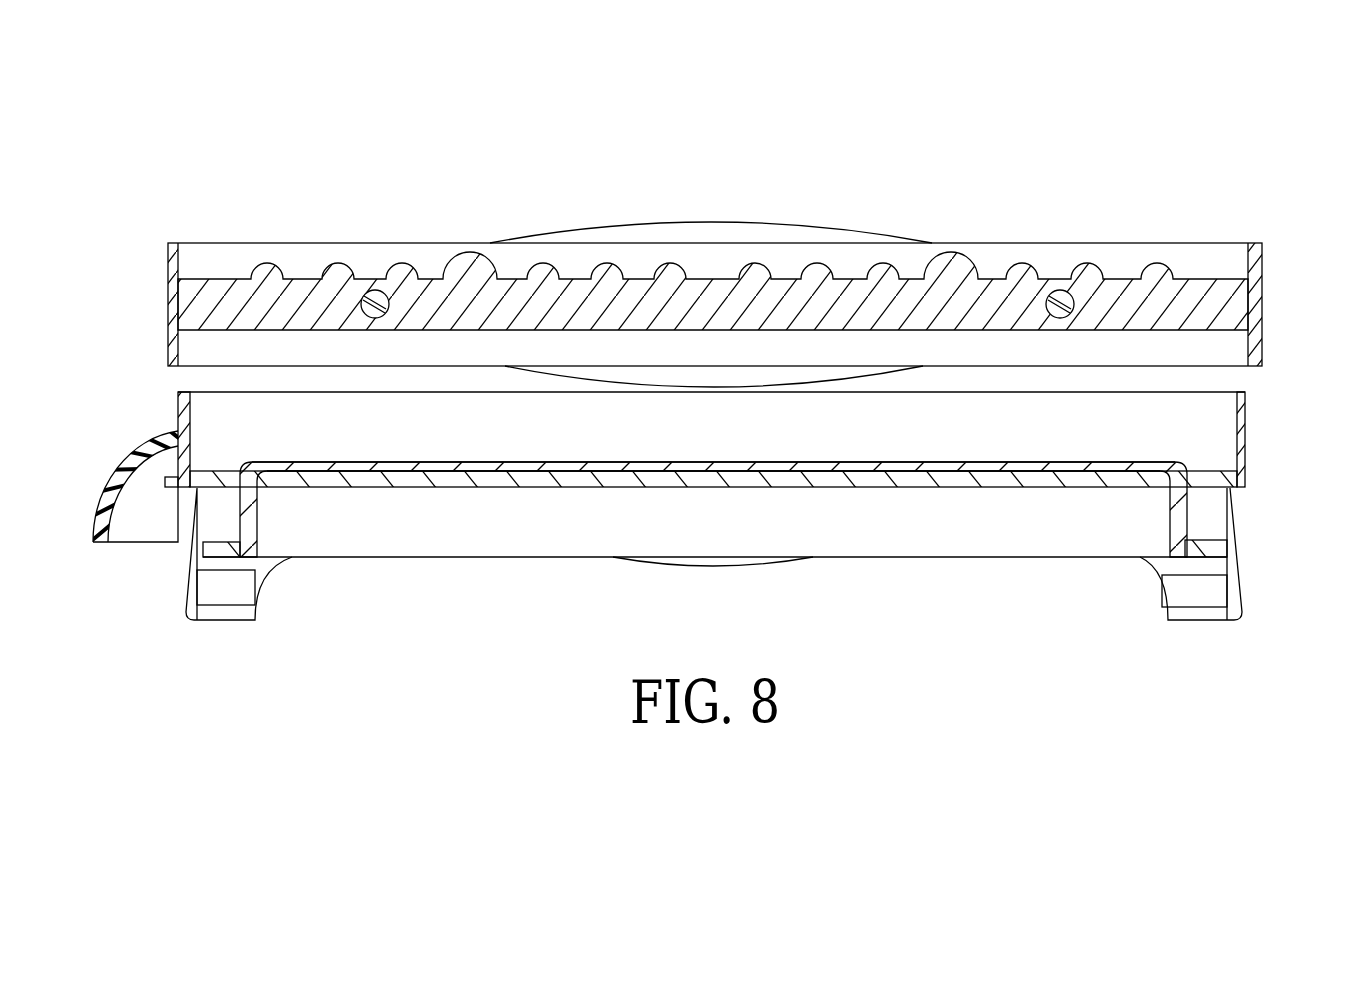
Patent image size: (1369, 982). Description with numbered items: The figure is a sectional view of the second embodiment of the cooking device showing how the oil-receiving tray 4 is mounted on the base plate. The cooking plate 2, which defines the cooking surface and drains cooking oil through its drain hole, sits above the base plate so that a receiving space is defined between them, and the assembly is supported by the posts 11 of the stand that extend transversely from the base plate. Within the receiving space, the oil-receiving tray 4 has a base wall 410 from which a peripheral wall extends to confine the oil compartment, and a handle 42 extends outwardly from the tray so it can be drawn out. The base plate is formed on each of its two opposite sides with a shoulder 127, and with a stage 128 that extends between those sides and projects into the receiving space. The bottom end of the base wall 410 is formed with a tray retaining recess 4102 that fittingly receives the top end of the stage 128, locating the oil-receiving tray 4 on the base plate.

The cooking plate 2 is at (1111, 210).
The oil-receiving tray 4 is at (140, 406).
The handle 42 is at (132, 500).
The base wall 410 is at (1052, 462).
The tray retaining recess 4102 is at (1103, 462).
The shoulder 127 is at (217, 543).
The stage 128 is at (487, 478).
The posts 11 is at (1238, 567).